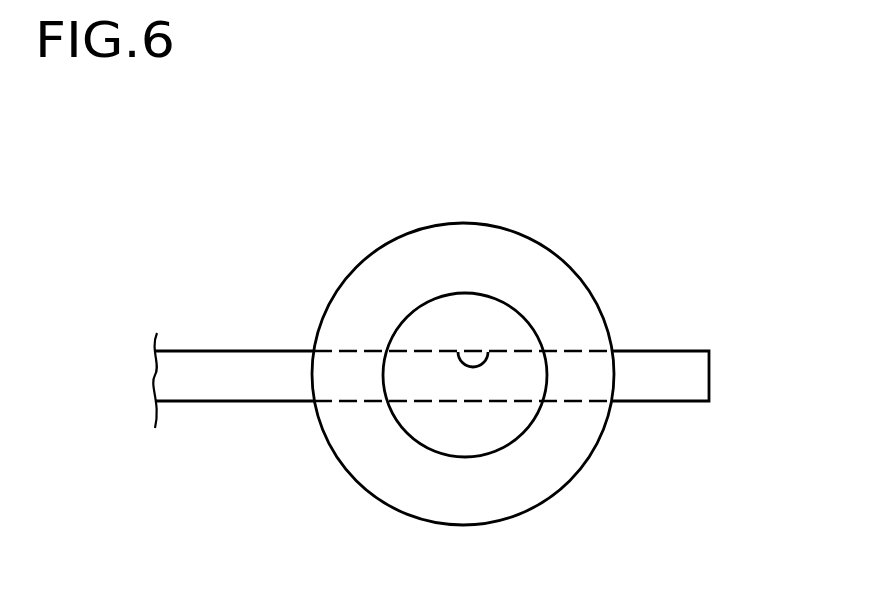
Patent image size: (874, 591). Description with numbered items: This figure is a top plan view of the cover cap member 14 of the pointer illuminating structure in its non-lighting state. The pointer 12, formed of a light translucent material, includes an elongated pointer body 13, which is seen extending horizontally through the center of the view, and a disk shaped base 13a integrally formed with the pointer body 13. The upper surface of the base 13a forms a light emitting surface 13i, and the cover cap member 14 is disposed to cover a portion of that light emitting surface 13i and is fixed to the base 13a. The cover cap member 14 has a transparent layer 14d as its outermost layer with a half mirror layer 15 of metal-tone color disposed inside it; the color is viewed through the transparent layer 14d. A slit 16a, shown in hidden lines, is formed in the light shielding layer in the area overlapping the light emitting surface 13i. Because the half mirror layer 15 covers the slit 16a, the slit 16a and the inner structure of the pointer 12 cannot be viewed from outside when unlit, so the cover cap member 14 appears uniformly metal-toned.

The pointer 12 is at (735, 226).
The pointer body 13 is at (692, 341).
The base 13a is at (498, 437).
The light emitting surface 13i is at (683, 375).
The cover cap member 14 is at (584, 262).
The transparent layer 14d is at (523, 258).
The half mirror layer 15 is at (582, 390).
The slit 16a is at (458, 358).